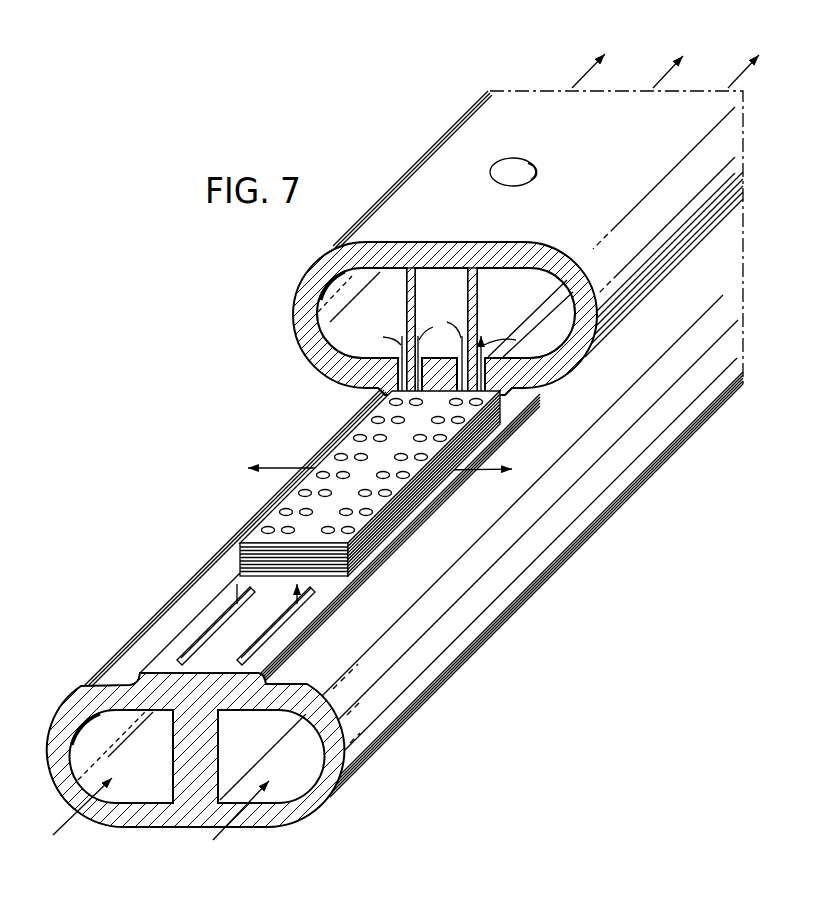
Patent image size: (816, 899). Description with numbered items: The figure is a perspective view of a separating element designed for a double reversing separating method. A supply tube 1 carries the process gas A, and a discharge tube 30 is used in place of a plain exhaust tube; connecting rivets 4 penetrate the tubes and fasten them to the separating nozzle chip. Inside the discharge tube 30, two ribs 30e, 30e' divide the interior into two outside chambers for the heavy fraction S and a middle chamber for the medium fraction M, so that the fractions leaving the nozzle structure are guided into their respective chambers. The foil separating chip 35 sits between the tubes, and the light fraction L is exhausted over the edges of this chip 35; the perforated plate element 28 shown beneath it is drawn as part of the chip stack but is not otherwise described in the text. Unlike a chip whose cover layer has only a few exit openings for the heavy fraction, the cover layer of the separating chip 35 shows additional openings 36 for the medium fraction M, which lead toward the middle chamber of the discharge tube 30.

The supply tube 1 is at (478, 659).
The connecting rivet 4 is at (519, 167).
The perforated plate / lamination stack 28 is at (361, 483).
The discharge tube 30 is at (530, 212).
The rib 30e is at (389, 331).
The rib 30e' is at (499, 331).
The foil separating chip 35 is at (427, 485).
The openings for medium fraction 36 is at (343, 471).